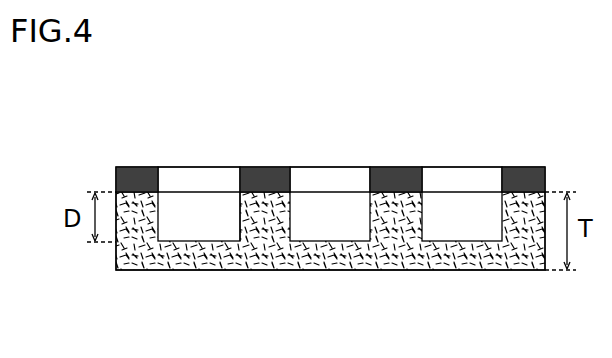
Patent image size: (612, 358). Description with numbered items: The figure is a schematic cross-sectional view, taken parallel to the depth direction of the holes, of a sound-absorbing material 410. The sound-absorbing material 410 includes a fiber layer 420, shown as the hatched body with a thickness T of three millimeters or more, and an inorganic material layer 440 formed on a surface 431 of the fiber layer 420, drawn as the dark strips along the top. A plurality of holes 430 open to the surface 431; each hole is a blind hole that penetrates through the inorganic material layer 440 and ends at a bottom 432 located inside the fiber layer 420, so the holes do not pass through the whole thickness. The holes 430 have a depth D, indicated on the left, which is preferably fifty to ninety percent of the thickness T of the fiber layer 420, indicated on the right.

The sound-absorbing material 410 is at (70, 117).
The fiber layer 420 is at (200, 247).
The holes 430 is at (468, 207).
The surface of the fiber layer 431 is at (263, 197).
The bottom of the hole 432 is at (315, 232).
The inorganic material layer 440 is at (528, 172).